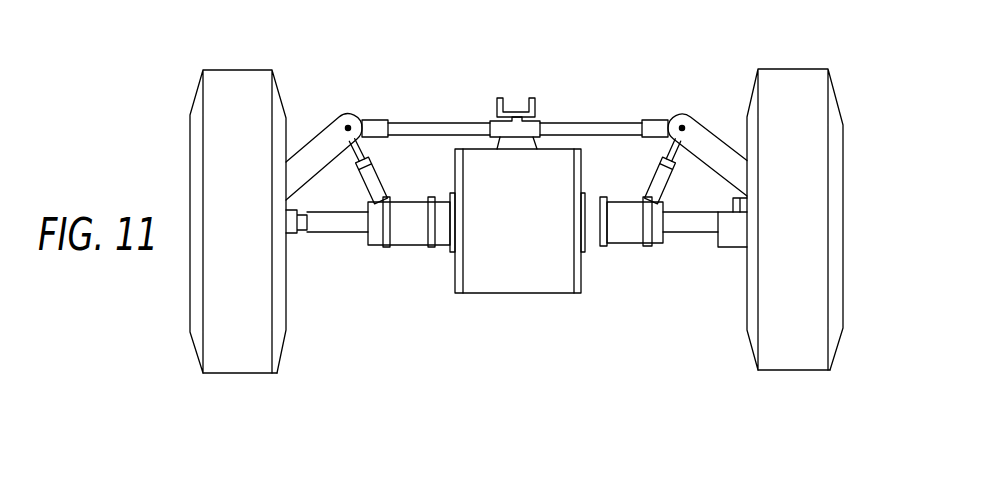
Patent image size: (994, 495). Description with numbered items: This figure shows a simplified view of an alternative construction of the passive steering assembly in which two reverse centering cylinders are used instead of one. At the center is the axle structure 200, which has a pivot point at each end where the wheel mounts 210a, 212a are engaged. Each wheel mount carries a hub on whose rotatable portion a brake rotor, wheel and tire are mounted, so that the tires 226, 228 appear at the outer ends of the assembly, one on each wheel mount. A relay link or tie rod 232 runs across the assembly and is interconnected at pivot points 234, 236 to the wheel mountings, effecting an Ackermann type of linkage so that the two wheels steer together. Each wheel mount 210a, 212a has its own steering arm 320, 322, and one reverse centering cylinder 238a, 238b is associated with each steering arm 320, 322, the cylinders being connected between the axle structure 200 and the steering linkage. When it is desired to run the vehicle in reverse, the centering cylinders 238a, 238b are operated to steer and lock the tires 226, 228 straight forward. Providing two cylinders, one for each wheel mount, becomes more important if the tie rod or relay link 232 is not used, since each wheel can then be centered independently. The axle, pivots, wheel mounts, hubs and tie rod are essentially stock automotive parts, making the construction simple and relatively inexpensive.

The axle structure 200 is at (605, 248).
The wheel mount 210a is at (294, 162).
The wheel mount 212a is at (747, 160).
The tire 226 is at (233, 353).
The tire 228 is at (793, 347).
The tie rod 232 is at (471, 122).
The pivot point 234 is at (349, 115).
The pivot point 236 is at (682, 114).
The reverse centering cylinder 238a is at (373, 170).
The reverse centering cylinder 238b is at (656, 170).
The steering arm 320 is at (328, 138).
The steering arm 322 is at (733, 163).